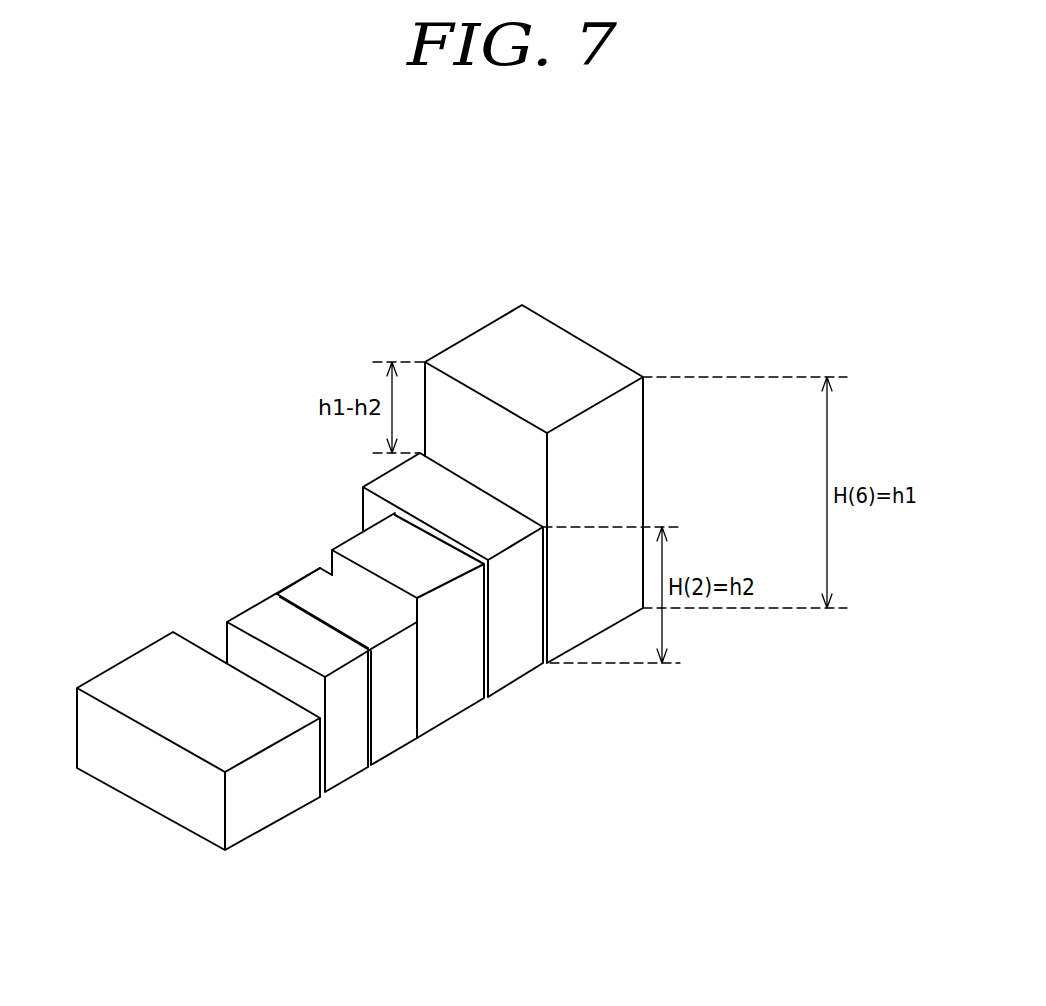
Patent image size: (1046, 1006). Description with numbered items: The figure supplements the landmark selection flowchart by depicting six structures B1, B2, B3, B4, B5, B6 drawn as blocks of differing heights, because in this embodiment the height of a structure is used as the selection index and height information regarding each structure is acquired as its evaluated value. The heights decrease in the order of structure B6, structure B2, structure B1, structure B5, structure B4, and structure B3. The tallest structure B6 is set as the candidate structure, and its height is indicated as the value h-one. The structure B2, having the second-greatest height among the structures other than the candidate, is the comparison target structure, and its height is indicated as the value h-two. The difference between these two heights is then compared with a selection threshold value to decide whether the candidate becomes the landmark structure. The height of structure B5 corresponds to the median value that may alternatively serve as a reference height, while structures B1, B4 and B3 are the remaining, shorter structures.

The structure B1 is at (442, 690).
The structure B2 is at (362, 500).
The structure B3 is at (137, 668).
The structure B4 is at (352, 760).
The structure B5 is at (303, 592).
The structure B6 is at (578, 360).